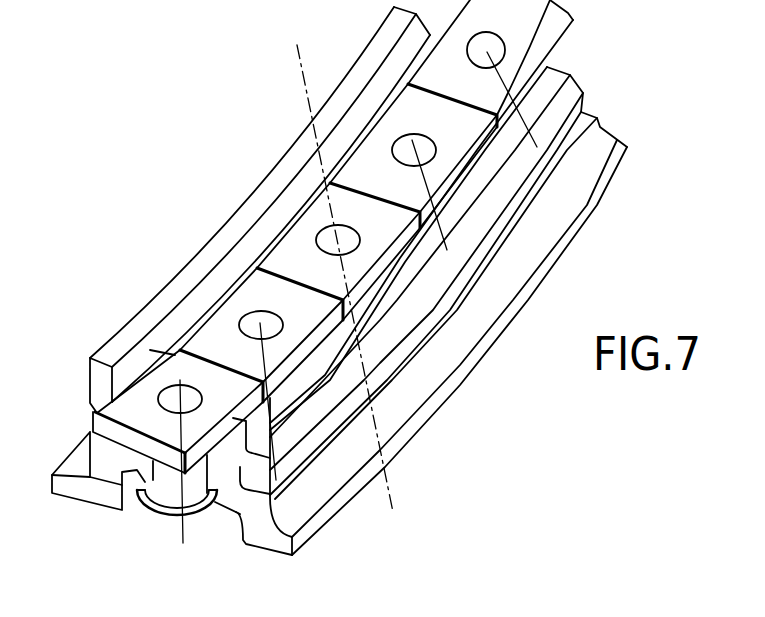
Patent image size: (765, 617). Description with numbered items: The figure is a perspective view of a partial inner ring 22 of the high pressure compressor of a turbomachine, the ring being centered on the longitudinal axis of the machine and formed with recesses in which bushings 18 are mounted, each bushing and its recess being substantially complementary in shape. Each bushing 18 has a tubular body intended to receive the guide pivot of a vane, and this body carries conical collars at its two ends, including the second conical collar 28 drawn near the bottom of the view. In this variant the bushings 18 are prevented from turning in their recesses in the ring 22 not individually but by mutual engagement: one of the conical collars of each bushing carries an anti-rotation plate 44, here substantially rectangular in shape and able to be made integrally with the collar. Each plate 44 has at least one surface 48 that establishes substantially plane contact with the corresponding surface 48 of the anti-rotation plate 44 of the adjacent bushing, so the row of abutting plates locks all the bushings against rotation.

The inner ring 22 is at (598, 157).
The anti-rotation plate 44 is at (373, 147).
The surface 48 is at (175, 355).
The second conical collar 28 is at (163, 507).
The bushing 18 is at (205, 524).